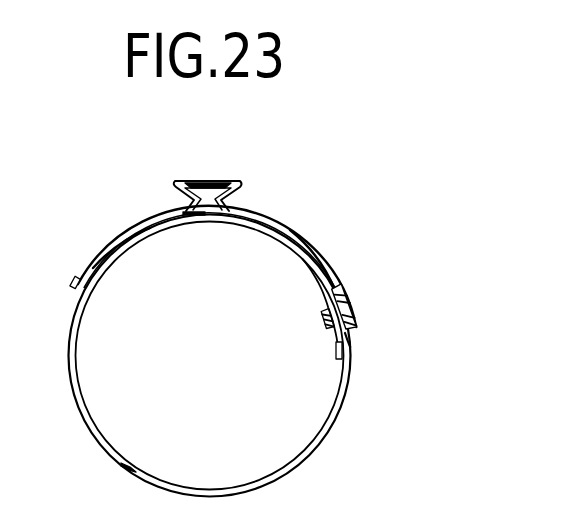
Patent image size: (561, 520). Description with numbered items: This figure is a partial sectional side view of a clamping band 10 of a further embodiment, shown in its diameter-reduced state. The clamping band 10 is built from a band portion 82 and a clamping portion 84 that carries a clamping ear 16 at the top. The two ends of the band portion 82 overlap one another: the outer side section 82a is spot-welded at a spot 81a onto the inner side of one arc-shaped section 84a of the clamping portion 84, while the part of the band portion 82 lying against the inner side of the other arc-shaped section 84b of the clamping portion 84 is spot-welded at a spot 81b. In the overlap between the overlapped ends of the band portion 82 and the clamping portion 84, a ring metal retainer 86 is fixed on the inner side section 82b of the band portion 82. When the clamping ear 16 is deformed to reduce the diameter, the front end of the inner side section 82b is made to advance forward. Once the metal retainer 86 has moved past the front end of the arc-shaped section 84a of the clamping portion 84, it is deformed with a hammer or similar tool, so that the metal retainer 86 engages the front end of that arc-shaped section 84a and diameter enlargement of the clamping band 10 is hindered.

The clamping band 10 is at (350, 411).
The clamping ear 16 is at (228, 181).
The band portion 82 is at (323, 426).
The outer side section 82a is at (349, 337).
The inner side section 82b is at (336, 345).
The clamping portion 84 is at (270, 218).
The arc-shaped section 84a is at (318, 252).
The arc-shaped section 84b is at (118, 238).
The spot 81a is at (338, 285).
The spot 81b is at (75, 276).
The ring metal retainer 86 is at (322, 312).